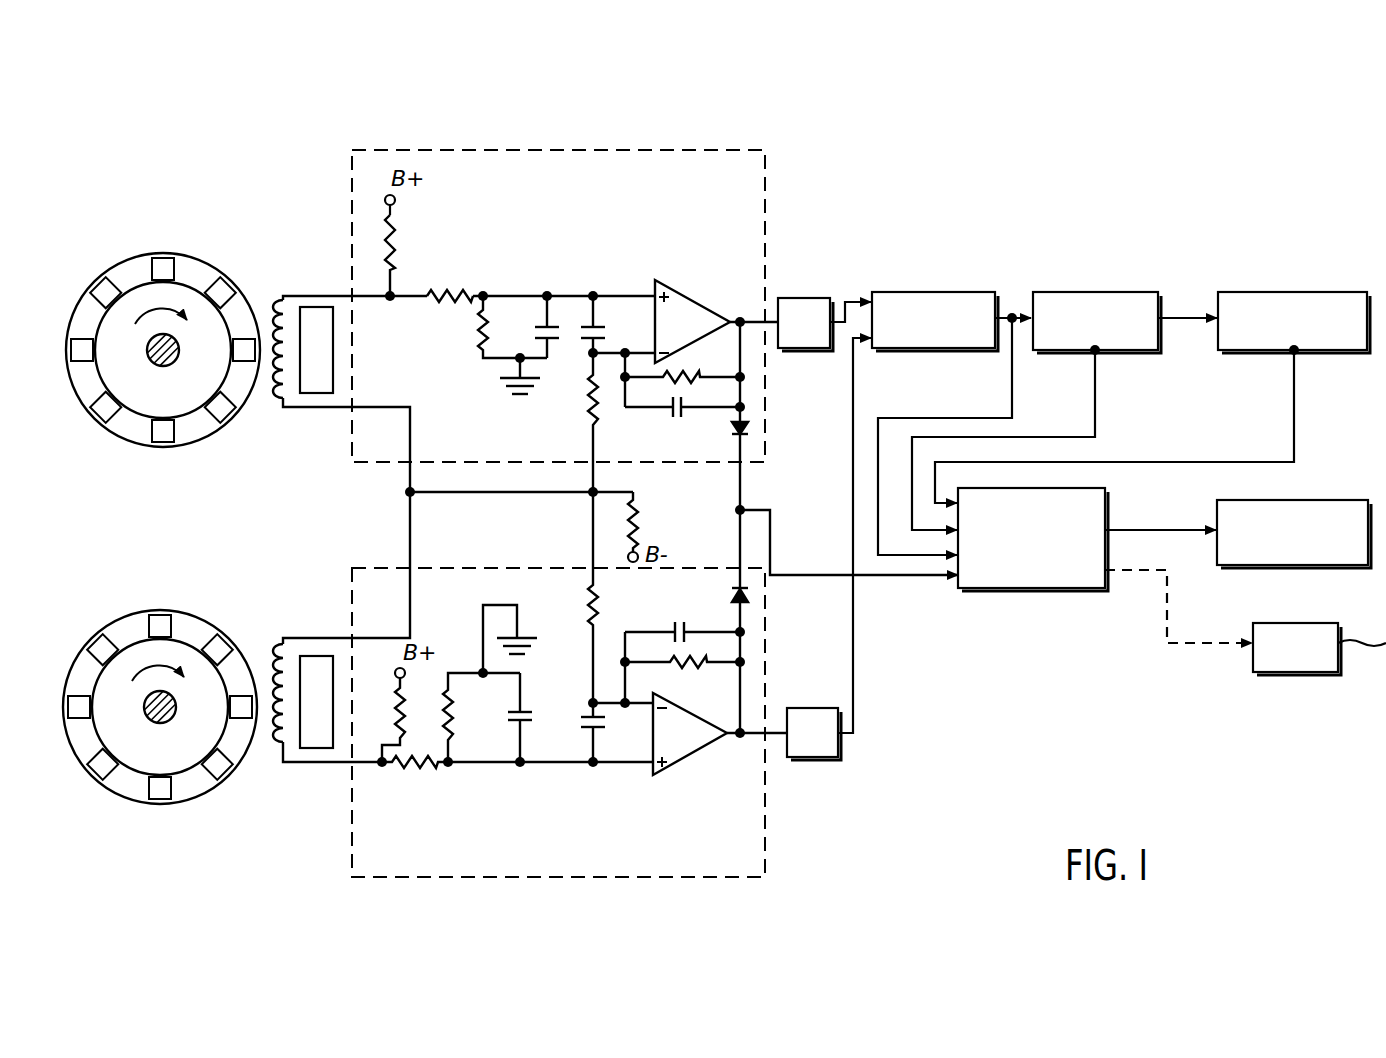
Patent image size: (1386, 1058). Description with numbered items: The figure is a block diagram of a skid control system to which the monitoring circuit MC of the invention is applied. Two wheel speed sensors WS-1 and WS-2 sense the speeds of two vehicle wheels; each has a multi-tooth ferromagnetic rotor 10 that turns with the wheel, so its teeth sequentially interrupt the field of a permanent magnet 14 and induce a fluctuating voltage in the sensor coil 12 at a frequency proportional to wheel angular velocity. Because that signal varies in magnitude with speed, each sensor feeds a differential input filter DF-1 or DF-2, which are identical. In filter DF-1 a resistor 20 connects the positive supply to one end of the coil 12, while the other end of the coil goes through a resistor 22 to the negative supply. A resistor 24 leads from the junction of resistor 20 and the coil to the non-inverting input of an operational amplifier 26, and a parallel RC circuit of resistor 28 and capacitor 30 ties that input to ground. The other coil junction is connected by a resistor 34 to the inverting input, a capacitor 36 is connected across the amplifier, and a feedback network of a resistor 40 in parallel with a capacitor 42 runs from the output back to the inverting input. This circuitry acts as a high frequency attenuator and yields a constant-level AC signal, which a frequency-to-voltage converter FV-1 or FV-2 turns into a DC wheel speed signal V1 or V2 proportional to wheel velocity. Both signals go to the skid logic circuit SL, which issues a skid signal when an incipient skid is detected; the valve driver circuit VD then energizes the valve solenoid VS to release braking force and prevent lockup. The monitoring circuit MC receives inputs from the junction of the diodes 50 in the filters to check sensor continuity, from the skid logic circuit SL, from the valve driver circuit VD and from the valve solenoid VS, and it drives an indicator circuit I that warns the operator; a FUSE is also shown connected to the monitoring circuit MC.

The rotor 10 is at (137, 420).
The sensor coil 12 is at (268, 408).
The permanent magnet 14 is at (333, 350).
The resistor 20 is at (398, 248).
The resistor 22 is at (640, 512).
The resistor 24 is at (446, 290).
The operational amplifier 26 is at (684, 318).
The resistor 28 is at (478, 322).
The capacitor 30 is at (536, 331).
The resistor 34 is at (590, 404).
The capacitor 36 is at (592, 332).
The resistor 40 is at (688, 380).
The capacitor 42 is at (678, 419).
The diode 50 is at (750, 432).
The wheel speed sensor WS-1 is at (265, 242).
The wheel speed sensor WS-2 is at (262, 774).
The differential input filter DF-1 is at (612, 78).
The differential input filter DF-2 is at (530, 881).
The frequency-to-voltage converter FV-1 is at (807, 298).
The frequency-to-voltage converter FV-2 is at (813, 760).
The wheel speed signal V1 is at (845, 300).
The wheel speed signal V2 is at (856, 658).
The skid logic circuit SL is at (929, 292).
The valve driver circuit VD is at (1084, 290).
The valve solenoid VS is at (1292, 290).
The monitoring circuit MC is at (1105, 498).
The indicator circuit I is at (1332, 500).
The fuse FUSE is at (1319, 649).